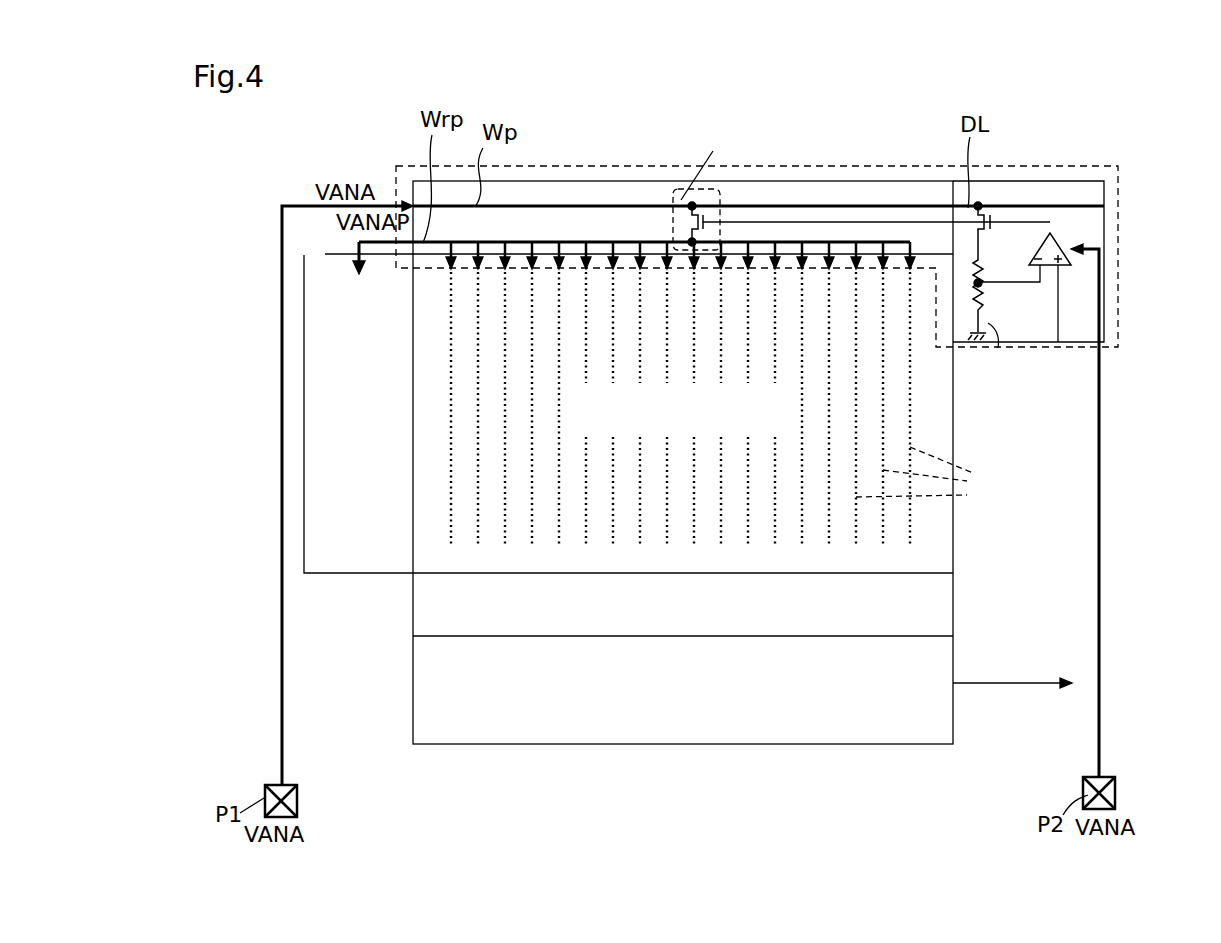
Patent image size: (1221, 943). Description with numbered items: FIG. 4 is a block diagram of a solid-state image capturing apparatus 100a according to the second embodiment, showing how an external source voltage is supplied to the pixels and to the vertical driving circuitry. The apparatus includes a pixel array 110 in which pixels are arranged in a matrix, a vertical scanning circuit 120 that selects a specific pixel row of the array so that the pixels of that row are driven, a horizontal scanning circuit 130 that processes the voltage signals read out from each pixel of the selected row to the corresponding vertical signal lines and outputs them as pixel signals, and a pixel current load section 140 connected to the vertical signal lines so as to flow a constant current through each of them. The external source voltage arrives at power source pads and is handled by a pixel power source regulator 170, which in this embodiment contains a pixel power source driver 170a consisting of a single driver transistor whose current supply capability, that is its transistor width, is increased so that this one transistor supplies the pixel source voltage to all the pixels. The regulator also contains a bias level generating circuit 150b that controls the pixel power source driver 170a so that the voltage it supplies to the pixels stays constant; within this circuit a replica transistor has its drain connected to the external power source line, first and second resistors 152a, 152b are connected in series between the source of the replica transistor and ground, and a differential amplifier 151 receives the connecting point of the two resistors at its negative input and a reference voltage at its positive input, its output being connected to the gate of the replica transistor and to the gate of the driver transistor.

The solid-state image capturing apparatus 100a is at (564, 812).
The pixel array 110 is at (945, 542).
The vertical scanning circuit 120 is at (330, 318).
The horizontal scanning circuit 130 is at (873, 730).
The pixel current load section 140 is at (940, 608).
The bias level generating circuit 150b is at (1085, 312).
The differential amplifier 151 is at (1050, 247).
The first resistor 152a is at (987, 267).
The second resistor 152b is at (970, 300).
The pixel power source regulator 170 is at (1055, 163).
The pixel power source driver 170a is at (673, 200).